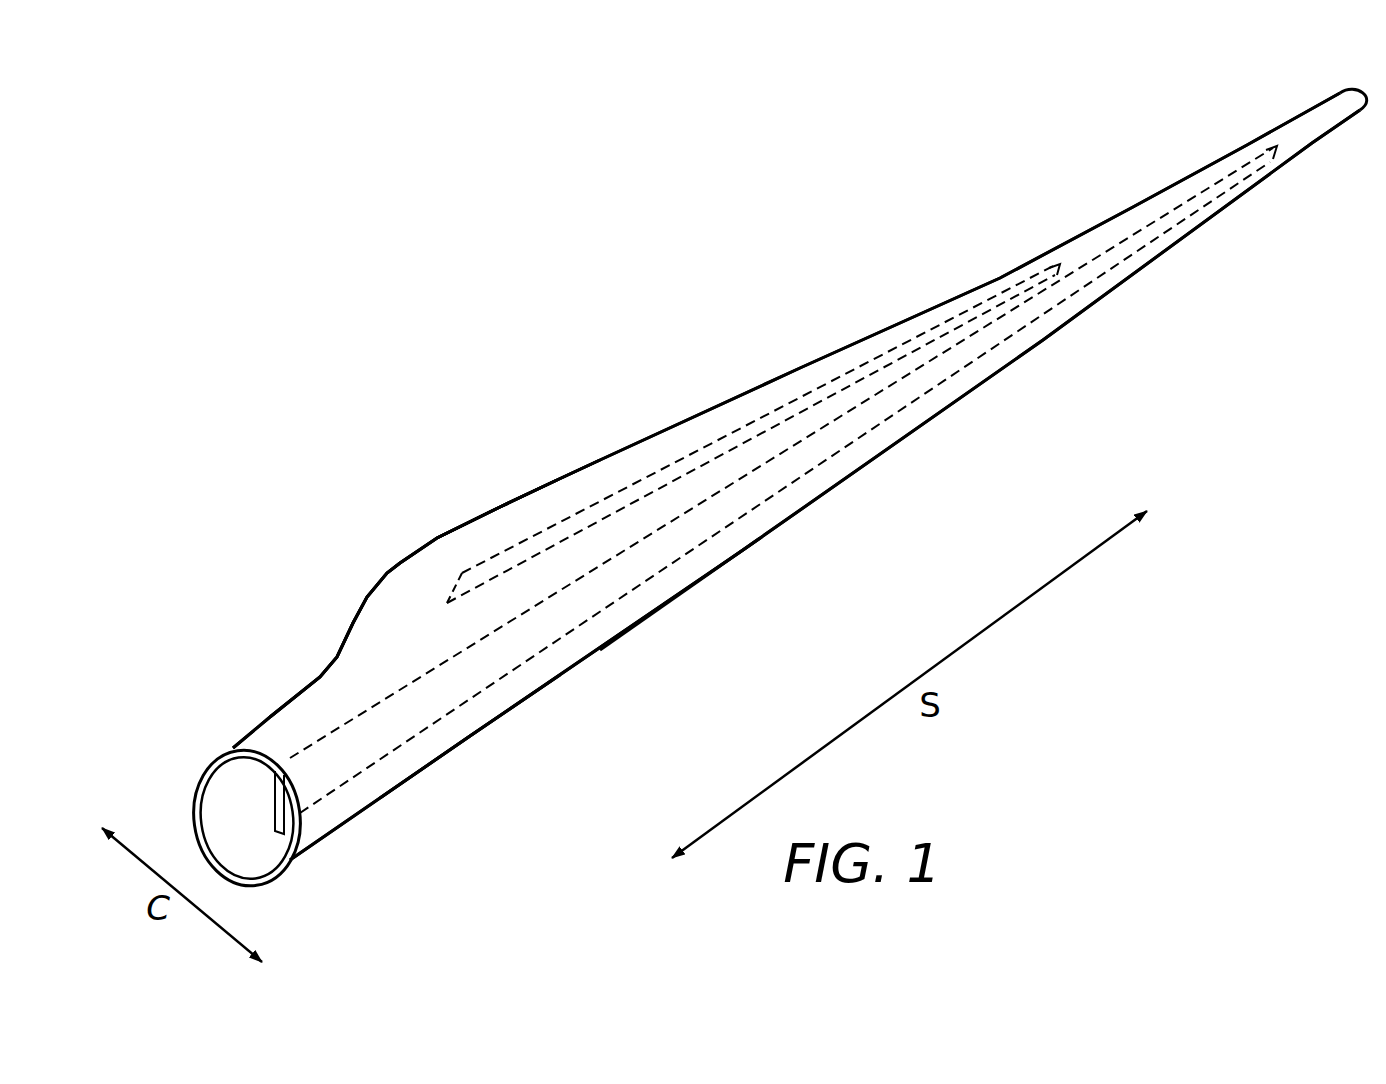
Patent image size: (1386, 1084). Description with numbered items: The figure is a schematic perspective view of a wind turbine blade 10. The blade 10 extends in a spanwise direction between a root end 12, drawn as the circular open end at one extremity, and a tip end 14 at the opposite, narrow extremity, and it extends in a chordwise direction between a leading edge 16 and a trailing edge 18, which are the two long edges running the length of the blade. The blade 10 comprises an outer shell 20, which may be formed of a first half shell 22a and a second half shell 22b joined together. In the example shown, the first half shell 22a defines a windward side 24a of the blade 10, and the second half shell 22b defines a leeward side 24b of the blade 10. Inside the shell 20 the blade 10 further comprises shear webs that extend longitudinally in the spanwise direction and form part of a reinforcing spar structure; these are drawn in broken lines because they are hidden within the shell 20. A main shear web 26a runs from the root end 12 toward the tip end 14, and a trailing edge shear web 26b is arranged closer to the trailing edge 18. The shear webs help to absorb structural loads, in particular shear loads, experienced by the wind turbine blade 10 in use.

The wind turbine blade 10 is at (399, 419).
The root end 12 is at (197, 763).
The tip end 14 is at (1338, 85).
The leading edge 16 is at (841, 484).
The trailing edge 18 is at (717, 407).
The outer shell 20 is at (359, 570).
The first half shell 22a is at (337, 687).
The second half shell 22b is at (451, 752).
The windward side 24a is at (572, 495).
The leeward side 24b is at (670, 604).
The main shear web 26a is at (288, 822).
The trailing edge shear web 26b is at (470, 577).